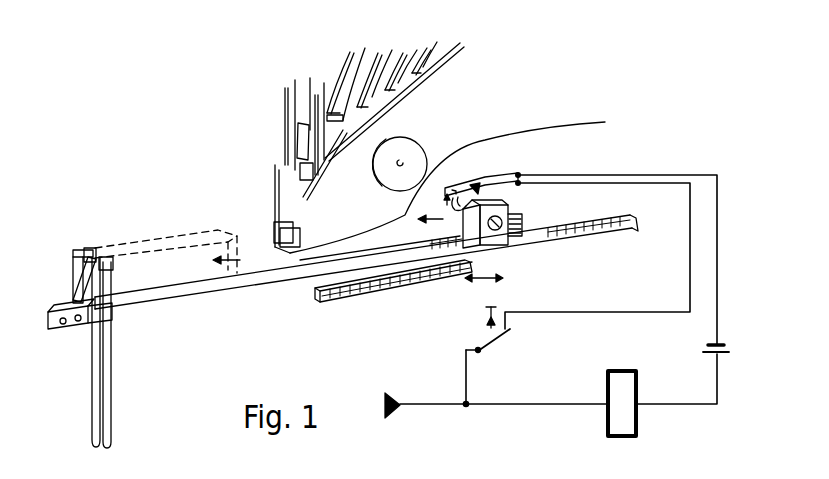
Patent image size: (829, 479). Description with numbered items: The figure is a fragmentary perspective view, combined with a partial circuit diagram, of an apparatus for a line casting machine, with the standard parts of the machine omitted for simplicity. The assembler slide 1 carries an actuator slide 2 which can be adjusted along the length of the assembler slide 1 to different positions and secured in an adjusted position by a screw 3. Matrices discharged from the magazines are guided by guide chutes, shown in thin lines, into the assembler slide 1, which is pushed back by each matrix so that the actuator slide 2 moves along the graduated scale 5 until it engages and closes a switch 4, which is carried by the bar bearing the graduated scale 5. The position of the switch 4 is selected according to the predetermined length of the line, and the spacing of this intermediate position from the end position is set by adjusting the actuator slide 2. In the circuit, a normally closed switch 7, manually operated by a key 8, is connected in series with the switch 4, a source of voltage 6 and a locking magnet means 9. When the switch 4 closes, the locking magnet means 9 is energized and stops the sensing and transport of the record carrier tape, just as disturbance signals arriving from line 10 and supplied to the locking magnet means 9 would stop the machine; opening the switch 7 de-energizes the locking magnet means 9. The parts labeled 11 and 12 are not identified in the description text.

The assembler slide 1 is at (283, 268).
The actuator slide 2 is at (497, 243).
The screw 3 is at (553, 244).
The switch 4 is at (467, 186).
The graduated scale 5 is at (428, 284).
The source of voltage 6 is at (723, 345).
The switch 7 is at (504, 336).
The key 8 is at (487, 313).
The locking magnet means 9 is at (623, 418).
The line 10 is at (400, 393).
The clamp 11 is at (80, 250).
The rods 12 is at (108, 406).